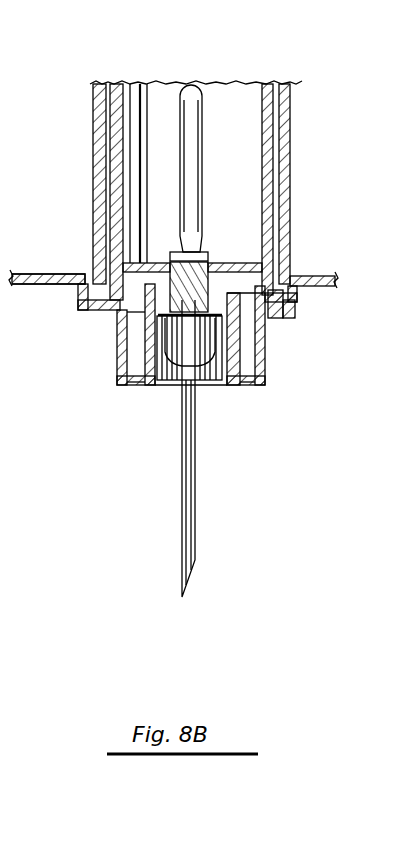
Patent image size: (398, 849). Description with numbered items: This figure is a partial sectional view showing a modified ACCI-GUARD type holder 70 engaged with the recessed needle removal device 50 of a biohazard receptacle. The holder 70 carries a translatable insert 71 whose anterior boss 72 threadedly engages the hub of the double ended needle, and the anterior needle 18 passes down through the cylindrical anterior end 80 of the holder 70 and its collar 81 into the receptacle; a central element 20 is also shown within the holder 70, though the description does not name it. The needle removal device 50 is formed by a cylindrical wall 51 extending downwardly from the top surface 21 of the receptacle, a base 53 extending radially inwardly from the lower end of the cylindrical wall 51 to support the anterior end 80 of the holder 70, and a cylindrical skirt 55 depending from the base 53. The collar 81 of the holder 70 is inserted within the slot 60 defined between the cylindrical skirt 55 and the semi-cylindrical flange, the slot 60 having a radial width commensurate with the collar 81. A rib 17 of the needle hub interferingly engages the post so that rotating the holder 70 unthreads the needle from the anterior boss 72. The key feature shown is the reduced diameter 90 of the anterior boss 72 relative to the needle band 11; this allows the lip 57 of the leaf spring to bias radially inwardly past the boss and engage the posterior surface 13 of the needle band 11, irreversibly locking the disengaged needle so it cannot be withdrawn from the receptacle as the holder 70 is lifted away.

The modified holder 70 is at (97, 118).
The translatable insert 71 is at (131, 132).
The plunger tube 20 is at (198, 112).
The anterior boss 72 is at (233, 265).
The anterior end of holder 80 is at (289, 318).
The top surface 21 is at (308, 278).
The cylindrical wall 51 is at (75, 302).
The base 53 is at (97, 316).
The diameter of anterior boss 90 is at (290, 292).
The lip 57 is at (110, 340).
The cylindrical skirt 55 is at (115, 365).
The collar 81 is at (268, 340).
The slot 60 is at (135, 386).
The posterior surface of needle band 13 is at (215, 388).
The needle band 11 is at (172, 388).
The rib 17 is at (165, 388).
The anterior needle 18 is at (180, 522).
The needle removal device 50 is at (88, 260).